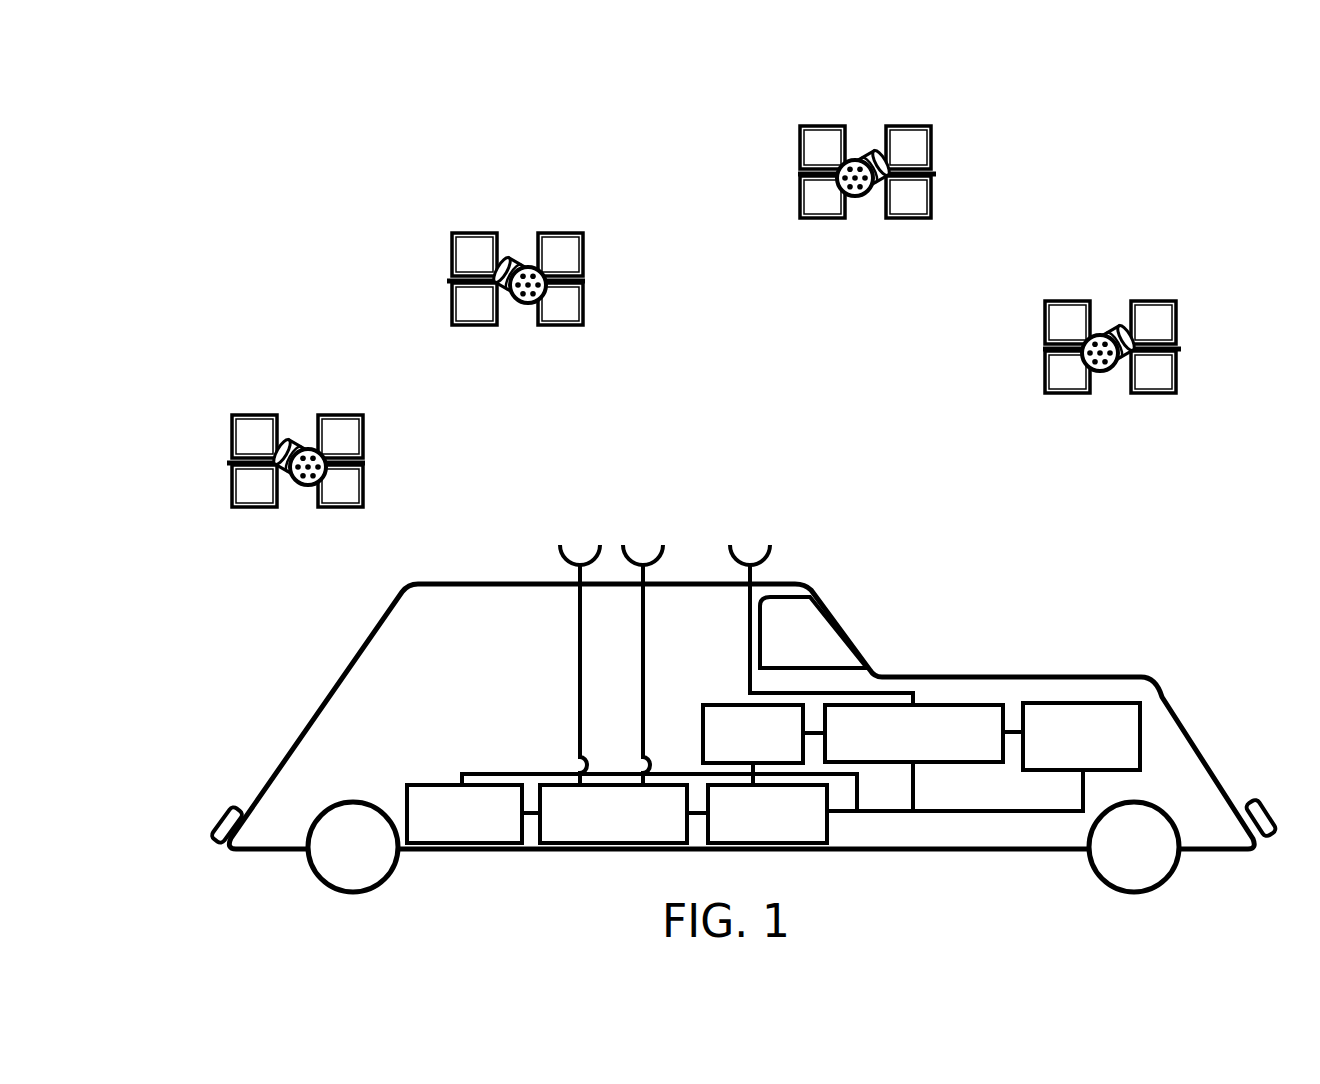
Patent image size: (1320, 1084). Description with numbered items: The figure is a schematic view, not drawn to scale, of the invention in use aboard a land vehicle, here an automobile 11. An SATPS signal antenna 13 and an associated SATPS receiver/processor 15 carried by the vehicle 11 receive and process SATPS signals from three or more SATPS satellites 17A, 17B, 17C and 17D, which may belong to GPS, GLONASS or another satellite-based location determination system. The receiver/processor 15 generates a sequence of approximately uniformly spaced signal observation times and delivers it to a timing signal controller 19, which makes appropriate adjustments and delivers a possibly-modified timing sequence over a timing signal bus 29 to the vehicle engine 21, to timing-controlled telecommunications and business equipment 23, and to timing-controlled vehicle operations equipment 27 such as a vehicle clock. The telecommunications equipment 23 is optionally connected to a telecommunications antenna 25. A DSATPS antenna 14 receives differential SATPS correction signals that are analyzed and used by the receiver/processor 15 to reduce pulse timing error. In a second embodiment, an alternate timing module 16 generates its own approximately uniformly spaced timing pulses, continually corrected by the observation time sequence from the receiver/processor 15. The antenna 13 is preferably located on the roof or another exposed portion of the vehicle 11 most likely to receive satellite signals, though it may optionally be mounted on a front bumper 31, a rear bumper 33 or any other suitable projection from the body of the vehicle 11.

The automobile 11 is at (1098, 586).
The SATPS signal antenna 13 is at (641, 613).
The DSATPS antenna 14 is at (577, 607).
The SATPS receiver/processor 15 is at (557, 798).
The alternate timing module 16 is at (415, 798).
The SATPS satellite 17A is at (303, 452).
The SATPS satellite 17B is at (527, 272).
The SATPS satellite 17C is at (866, 162).
The SATPS satellite 17D is at (1110, 337).
The timing signal controller 19 is at (712, 800).
The vehicle engine 21 is at (1072, 714).
The telecommunications equipment 23 is at (952, 716).
The telecommunications antenna 25 is at (748, 620).
The vehicle operations equipment 27 is at (708, 716).
The timing signal bus 29 is at (938, 813).
The front bumper 31 is at (1258, 812).
The rear bumper 33 is at (225, 822).